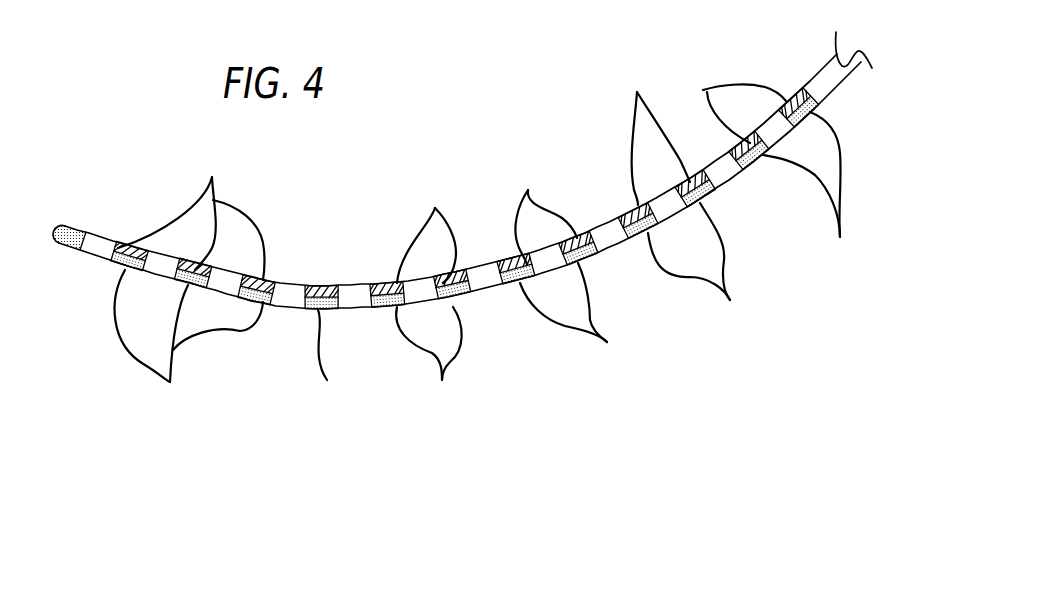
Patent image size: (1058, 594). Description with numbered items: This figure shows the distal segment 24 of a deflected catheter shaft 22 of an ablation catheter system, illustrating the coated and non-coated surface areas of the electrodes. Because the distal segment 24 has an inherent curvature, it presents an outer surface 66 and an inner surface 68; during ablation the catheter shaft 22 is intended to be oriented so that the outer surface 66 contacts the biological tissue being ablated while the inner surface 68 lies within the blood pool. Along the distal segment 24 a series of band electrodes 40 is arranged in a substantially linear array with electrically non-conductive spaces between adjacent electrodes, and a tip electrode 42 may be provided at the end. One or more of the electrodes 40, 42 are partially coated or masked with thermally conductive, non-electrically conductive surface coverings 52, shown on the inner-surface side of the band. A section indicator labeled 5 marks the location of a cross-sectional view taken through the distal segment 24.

The steerable catheter shaft 22 is at (825, 80).
The distal segment 24 is at (462, 222).
The band electrodes 40 is at (481, 245).
The tip electrode 42 is at (70, 232).
The surface coverings 52 is at (528, 190).
The outer surface 66 is at (492, 300).
The inner surface 68 is at (616, 212).
The section line 5- 5 is at (388, 355).